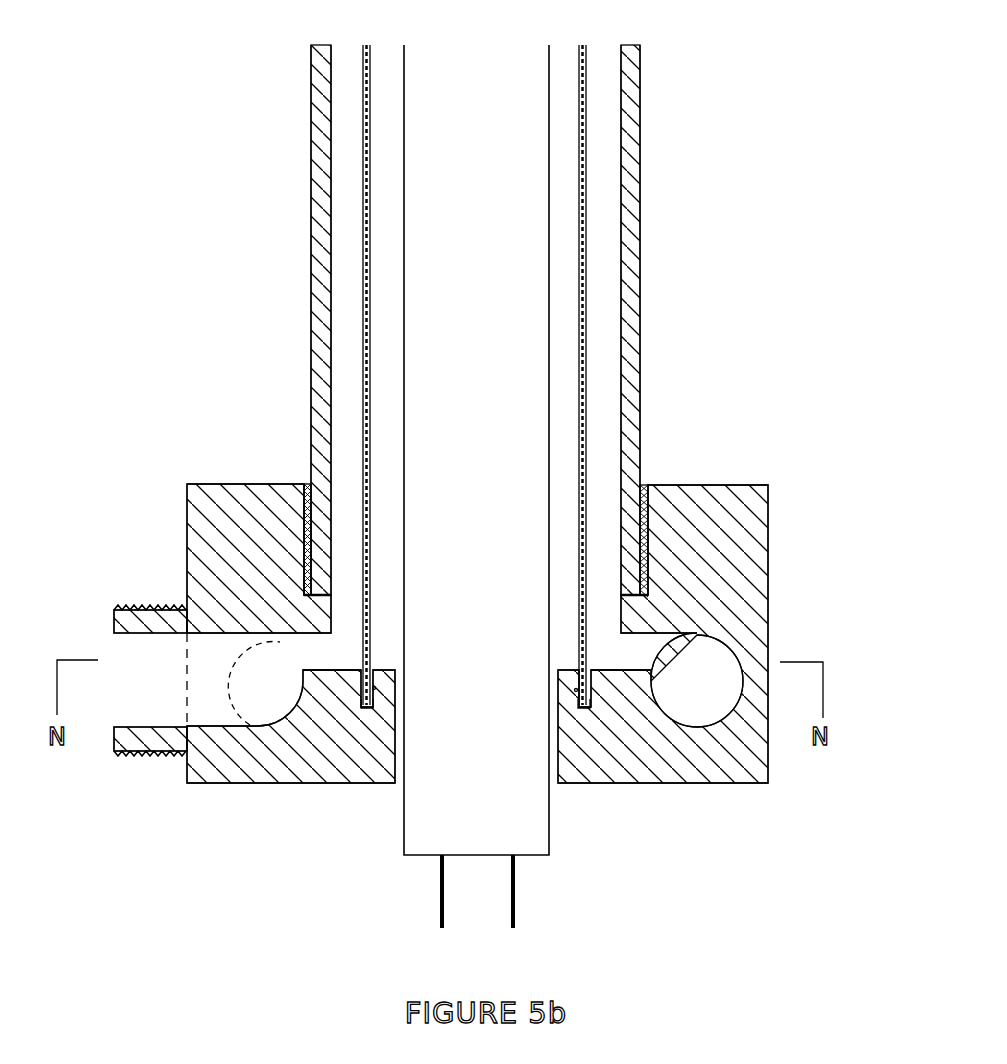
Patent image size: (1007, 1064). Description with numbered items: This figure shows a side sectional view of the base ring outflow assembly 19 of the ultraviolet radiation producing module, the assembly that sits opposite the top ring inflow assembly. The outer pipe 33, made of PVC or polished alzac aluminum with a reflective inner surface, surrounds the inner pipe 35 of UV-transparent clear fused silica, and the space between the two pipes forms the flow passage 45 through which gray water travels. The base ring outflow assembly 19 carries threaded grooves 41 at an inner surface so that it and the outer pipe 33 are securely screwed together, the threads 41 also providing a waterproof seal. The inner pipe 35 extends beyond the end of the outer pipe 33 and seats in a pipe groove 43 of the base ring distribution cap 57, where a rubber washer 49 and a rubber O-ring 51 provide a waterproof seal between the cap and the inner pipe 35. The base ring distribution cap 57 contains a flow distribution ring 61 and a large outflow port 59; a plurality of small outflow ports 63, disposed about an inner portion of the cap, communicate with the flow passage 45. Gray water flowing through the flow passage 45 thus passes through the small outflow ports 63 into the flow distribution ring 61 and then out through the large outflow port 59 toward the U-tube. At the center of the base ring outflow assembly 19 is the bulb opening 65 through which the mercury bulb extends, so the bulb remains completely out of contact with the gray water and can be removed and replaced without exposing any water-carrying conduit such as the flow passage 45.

The base ring outflow assembly 19 is at (490, 633).
The outer pipe 33 is at (310, 92).
The inner pipe 35 is at (582, 477).
The threads 41 is at (308, 483).
The pipe groove 43 is at (372, 673).
The flow passage 45 is at (346, 266).
The rubber washer 49 is at (366, 712).
The rubber O-ring 51 is at (572, 690).
The base ring distribution cap 57 is at (768, 622).
The large outflow port 59 is at (150, 680).
The flow distribution ring 61 is at (485, 681).
The small outflow ports 63 is at (476, 654).
The bulb opening 65 is at (476, 486).